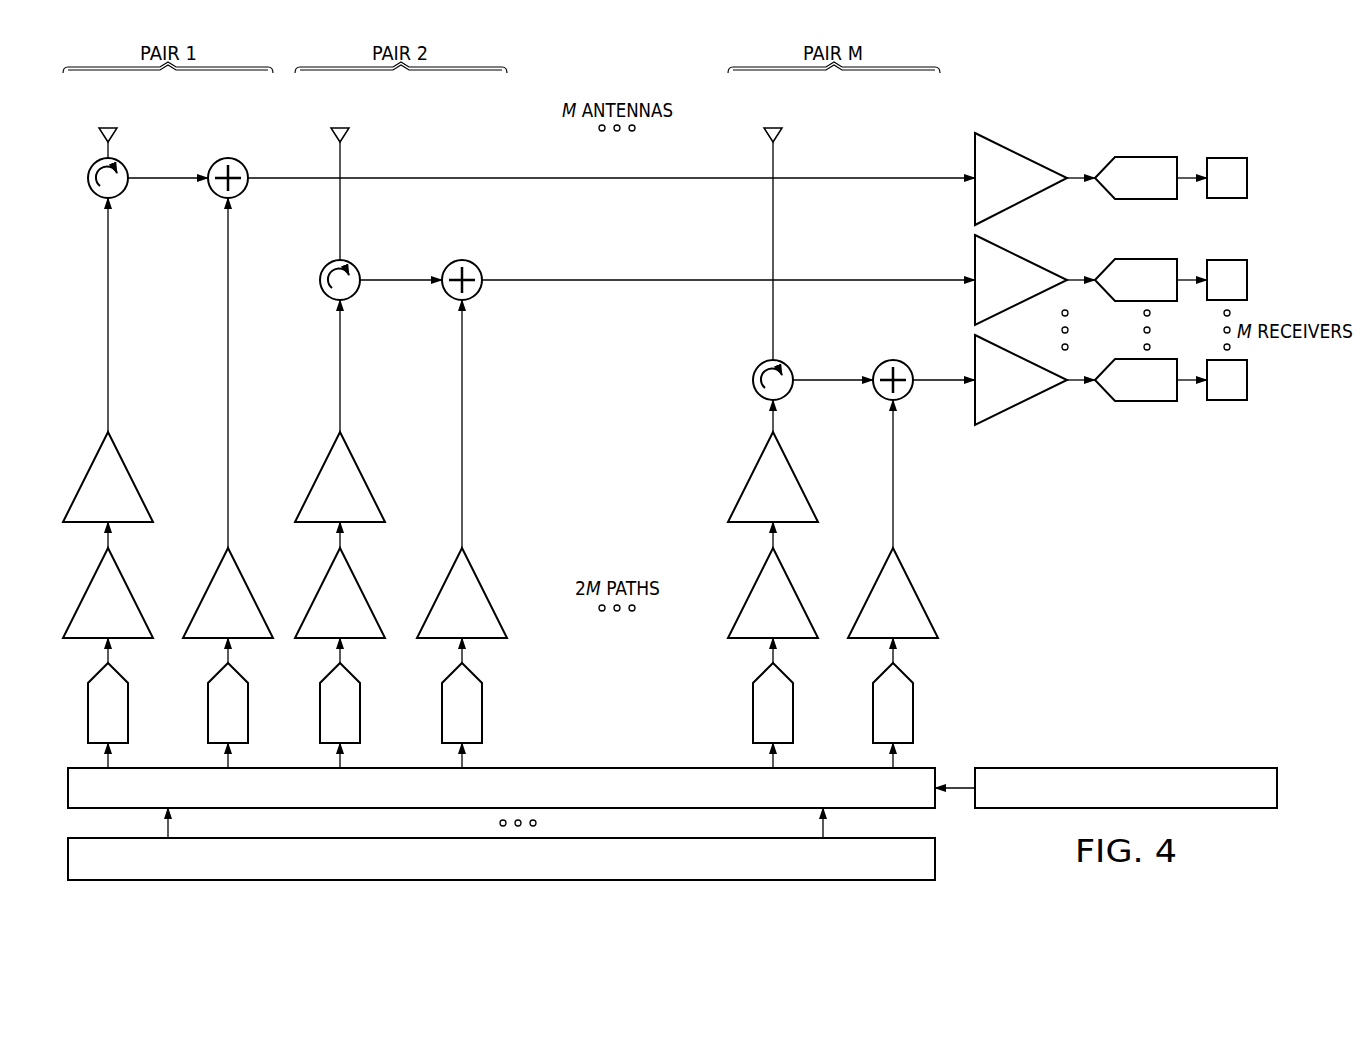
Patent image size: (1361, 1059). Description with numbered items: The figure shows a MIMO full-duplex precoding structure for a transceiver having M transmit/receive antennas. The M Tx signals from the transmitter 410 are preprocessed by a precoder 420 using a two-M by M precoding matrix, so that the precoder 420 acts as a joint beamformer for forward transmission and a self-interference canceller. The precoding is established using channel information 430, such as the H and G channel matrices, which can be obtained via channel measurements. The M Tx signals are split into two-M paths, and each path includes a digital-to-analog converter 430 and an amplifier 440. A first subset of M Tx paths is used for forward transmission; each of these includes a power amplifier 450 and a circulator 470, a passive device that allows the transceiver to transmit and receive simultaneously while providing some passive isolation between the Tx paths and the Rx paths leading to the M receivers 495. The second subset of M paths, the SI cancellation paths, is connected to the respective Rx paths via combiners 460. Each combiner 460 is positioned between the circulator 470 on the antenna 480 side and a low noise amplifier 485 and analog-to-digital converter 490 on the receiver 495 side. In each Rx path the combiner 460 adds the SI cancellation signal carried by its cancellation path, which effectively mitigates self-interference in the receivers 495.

The transmitter 410 is at (935, 860).
The precoder 420 is at (590, 768).
The channel information 430 is at (128, 700).
The amplifier 440 is at (153, 583).
The power amplifier 450 is at (130, 475).
The combiner 460 is at (243, 197).
The circulator 470 is at (118, 197).
The antenna 480 is at (103, 127).
The low noise amplifier 485 is at (1020, 153).
The analog-to-digital converter 490 is at (1147, 155).
The receiver 495 is at (1227, 158).